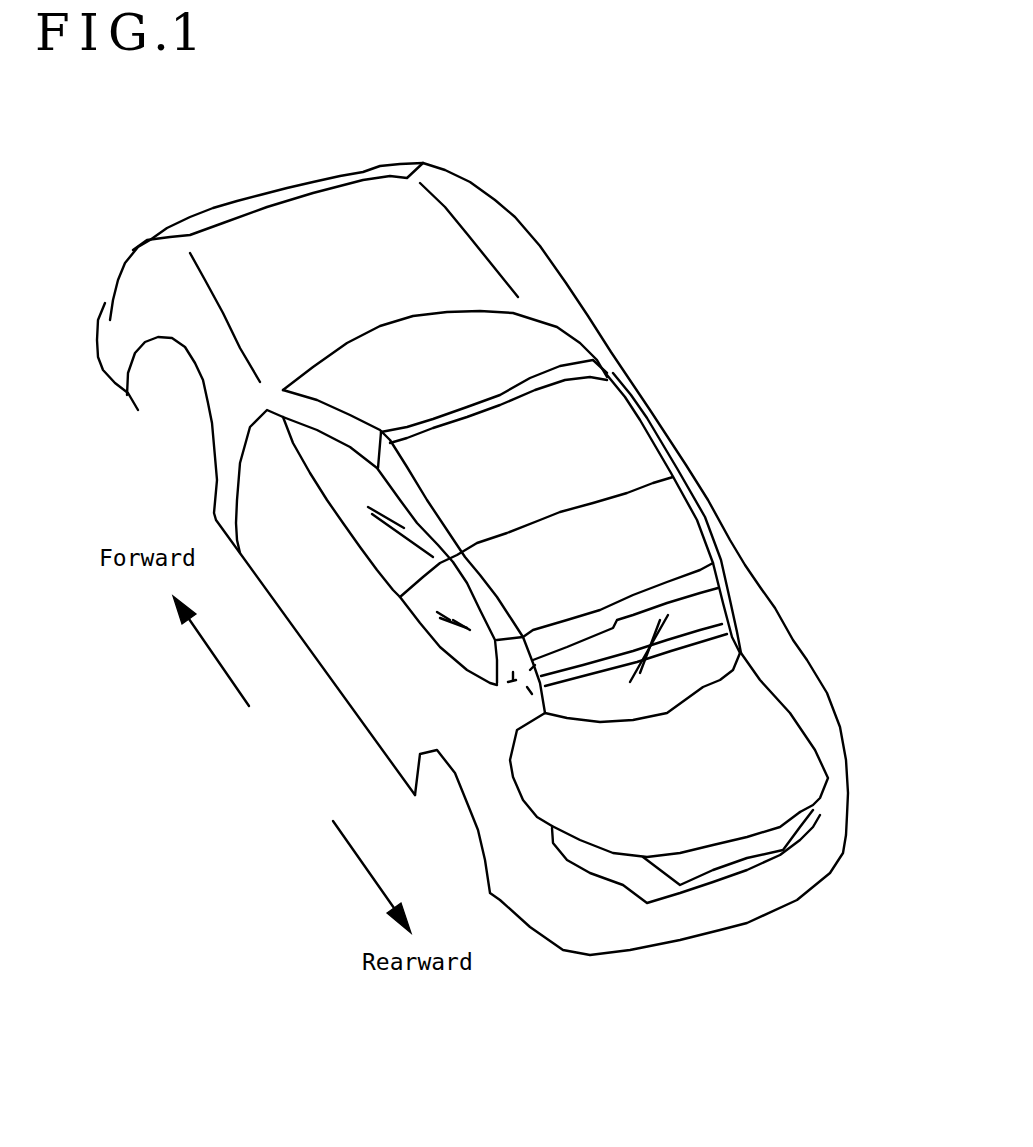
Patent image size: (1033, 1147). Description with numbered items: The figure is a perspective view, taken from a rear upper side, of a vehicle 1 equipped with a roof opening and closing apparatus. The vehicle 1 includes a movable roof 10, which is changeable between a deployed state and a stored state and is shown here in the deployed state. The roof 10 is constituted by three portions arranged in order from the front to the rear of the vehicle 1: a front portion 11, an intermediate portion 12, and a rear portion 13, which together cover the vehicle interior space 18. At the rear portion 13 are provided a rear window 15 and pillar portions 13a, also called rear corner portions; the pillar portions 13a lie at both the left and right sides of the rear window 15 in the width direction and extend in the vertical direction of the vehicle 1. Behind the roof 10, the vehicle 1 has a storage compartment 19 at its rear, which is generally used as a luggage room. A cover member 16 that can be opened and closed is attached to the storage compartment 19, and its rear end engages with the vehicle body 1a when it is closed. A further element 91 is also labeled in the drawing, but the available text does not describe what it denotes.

The vehicle 1 is at (472, 547).
The vehicle body 1a is at (586, 418).
The movable roof 10 is at (573, 386).
The front portion 11 is at (493, 342).
The intermediate portion 12 is at (599, 497).
The rear portion 13 is at (685, 581).
The pillar portions 13a is at (735, 641).
The rear window 15 is at (703, 600).
The cover member 16 is at (727, 739).
The vehicle interior space 18 is at (383, 603).
The storage compartment 19 is at (754, 831).
The rear deck panel 91 is at (724, 687).